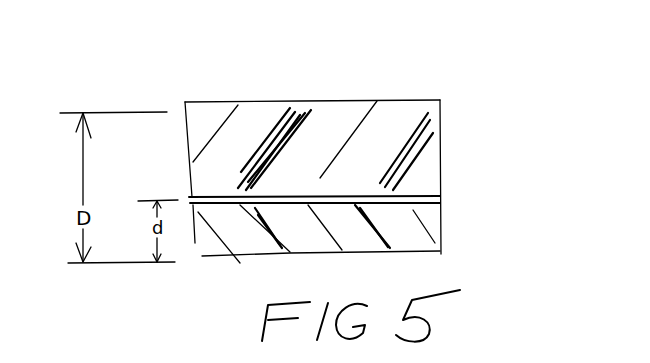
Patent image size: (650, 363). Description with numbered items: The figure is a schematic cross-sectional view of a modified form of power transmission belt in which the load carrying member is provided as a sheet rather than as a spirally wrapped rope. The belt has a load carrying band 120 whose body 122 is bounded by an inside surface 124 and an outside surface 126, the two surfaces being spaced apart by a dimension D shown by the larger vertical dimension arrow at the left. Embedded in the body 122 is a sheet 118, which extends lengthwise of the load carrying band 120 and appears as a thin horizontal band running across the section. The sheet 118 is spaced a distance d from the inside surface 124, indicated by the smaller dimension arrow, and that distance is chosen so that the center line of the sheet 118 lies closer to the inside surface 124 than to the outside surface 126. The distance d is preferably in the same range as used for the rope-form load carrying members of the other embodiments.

The sheet 118 is at (440, 198).
The load carrying band 120 is at (450, 103).
The body 122 is at (440, 153).
The inside surface 124 is at (284, 253).
The outside surface 126 is at (280, 101).